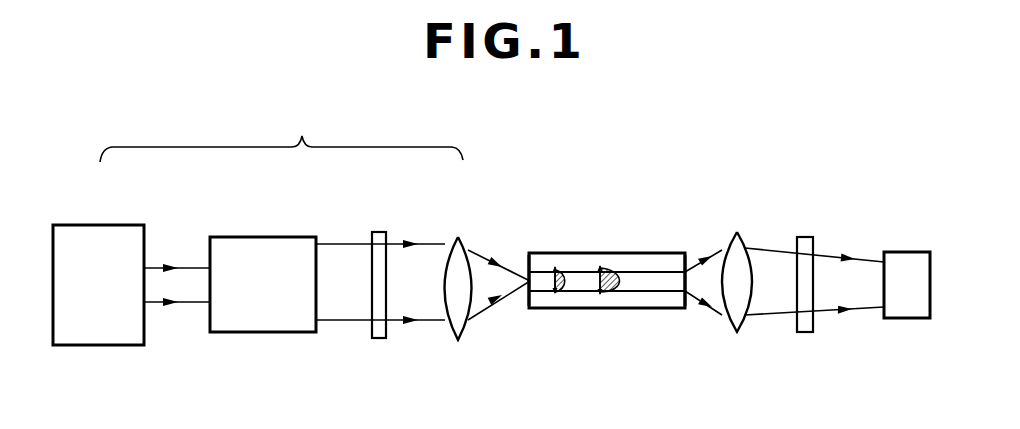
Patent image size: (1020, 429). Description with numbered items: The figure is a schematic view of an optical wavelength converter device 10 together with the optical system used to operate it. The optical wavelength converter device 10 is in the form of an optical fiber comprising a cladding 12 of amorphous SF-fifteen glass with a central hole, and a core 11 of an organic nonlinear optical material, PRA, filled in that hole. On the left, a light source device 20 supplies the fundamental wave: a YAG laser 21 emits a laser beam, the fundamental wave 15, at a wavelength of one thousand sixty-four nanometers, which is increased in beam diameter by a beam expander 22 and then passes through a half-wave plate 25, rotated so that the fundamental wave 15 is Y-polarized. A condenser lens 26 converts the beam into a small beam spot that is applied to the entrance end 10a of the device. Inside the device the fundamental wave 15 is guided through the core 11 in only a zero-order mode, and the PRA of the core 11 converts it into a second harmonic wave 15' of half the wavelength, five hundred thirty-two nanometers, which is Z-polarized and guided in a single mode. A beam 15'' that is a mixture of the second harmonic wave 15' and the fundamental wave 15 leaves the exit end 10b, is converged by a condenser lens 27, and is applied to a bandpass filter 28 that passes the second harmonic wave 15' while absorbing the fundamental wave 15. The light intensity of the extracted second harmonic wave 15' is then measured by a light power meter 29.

The optical wavelength converter device 10 is at (624, 222).
The entrance end 10a is at (528, 285).
The exit end 10b is at (687, 306).
The core 11 is at (642, 283).
The cladding 12 is at (665, 258).
The fundamental wave 15 is at (370, 308).
The second harmonic wave 15' is at (722, 257).
The beam 15'' is at (713, 251).
The light source device 20 is at (281, 133).
The YAG laser 21 is at (122, 225).
The beam expander 22 is at (283, 237).
The λ/2 plate 25 is at (378, 232).
The condenser lens 26 is at (443, 265).
The condenser lens 27 is at (745, 325).
The bandpass filter 28 is at (812, 333).
The light power meter 29 is at (915, 320).